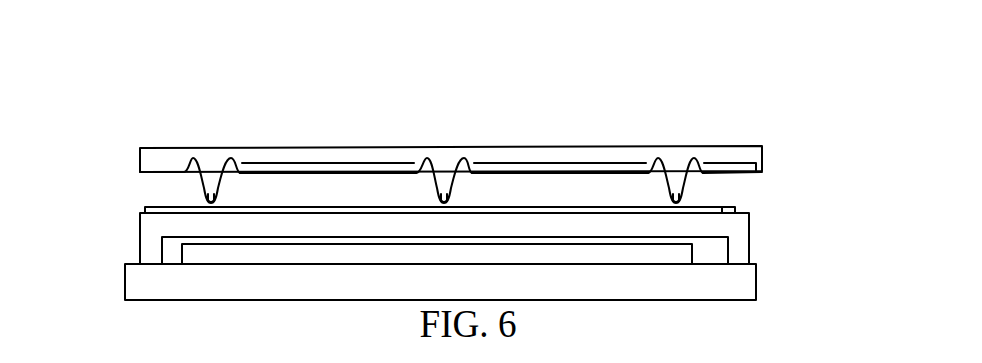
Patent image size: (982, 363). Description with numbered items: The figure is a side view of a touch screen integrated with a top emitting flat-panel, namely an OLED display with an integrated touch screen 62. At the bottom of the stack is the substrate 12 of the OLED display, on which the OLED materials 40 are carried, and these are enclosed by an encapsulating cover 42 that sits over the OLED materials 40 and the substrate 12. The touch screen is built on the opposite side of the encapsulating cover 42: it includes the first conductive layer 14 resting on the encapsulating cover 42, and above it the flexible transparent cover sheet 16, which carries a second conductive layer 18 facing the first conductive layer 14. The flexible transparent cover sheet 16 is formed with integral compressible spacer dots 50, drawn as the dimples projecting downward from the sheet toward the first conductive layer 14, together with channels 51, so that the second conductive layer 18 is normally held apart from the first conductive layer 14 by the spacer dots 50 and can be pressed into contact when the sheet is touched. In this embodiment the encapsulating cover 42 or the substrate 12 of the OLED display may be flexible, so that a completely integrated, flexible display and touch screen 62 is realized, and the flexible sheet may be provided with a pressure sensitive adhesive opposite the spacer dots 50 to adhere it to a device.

The OLED display with an integrated touch screen 62 is at (568, 76).
The flexible transparent cover sheet 16 is at (145, 152).
The second conductive layer 18 is at (762, 170).
The compressible spacer dots 50 is at (208, 170).
The channels 51 is at (215, 204).
The first conductive layer 14 is at (735, 211).
The encapsulating cover 42 is at (140, 231).
The OLED materials 40 is at (692, 247).
The substrate 12 is at (150, 285).